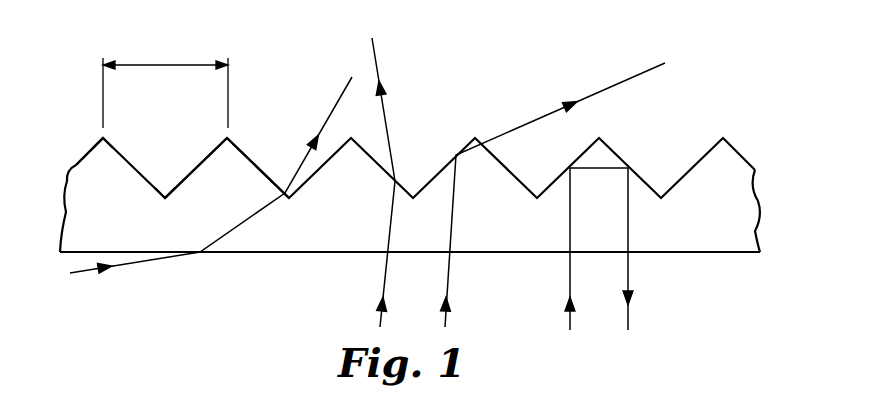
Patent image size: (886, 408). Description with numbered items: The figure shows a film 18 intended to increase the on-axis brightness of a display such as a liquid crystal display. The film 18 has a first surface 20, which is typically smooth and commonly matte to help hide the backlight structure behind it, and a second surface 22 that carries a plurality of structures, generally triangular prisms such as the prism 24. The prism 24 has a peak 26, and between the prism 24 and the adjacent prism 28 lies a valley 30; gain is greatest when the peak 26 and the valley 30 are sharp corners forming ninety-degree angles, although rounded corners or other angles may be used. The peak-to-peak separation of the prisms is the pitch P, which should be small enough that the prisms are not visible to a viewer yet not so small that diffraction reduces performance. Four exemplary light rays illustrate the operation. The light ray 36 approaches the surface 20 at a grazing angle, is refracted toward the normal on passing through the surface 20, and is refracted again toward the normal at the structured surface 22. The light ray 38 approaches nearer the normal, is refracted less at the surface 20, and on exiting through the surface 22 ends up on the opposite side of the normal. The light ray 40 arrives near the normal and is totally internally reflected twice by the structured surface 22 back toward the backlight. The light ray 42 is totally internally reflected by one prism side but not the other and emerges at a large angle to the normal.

The film 18 is at (760, 202).
The first surface 20 is at (280, 253).
The second surface 22 is at (207, 157).
The prism 24 is at (78, 170).
The peak 26 is at (100, 135).
The adjacent prism 28 is at (250, 163).
The valley 30 is at (164, 193).
The light ray 36 is at (135, 268).
The light ray 38 is at (385, 282).
The light ray 40 is at (568, 322).
The light ray 42 is at (449, 282).
The pitch P is at (163, 60).